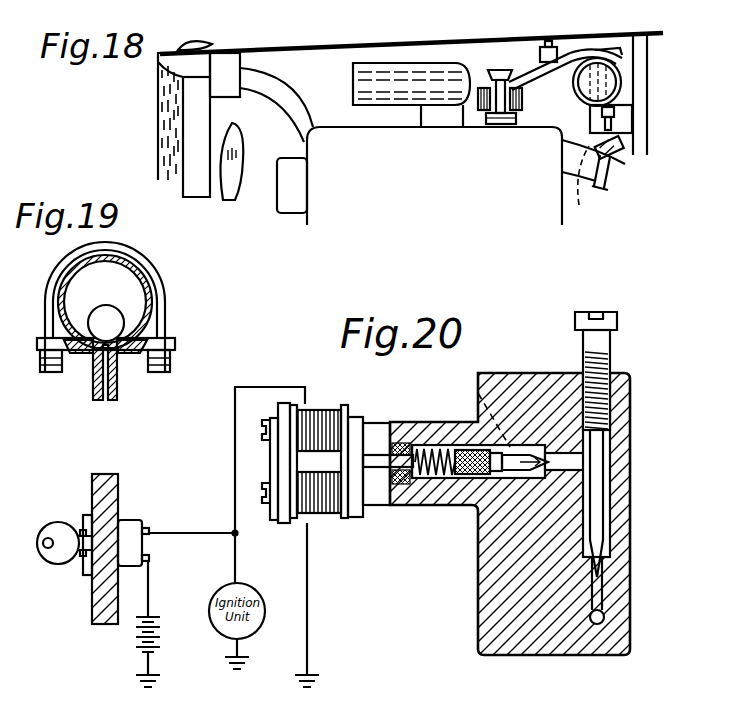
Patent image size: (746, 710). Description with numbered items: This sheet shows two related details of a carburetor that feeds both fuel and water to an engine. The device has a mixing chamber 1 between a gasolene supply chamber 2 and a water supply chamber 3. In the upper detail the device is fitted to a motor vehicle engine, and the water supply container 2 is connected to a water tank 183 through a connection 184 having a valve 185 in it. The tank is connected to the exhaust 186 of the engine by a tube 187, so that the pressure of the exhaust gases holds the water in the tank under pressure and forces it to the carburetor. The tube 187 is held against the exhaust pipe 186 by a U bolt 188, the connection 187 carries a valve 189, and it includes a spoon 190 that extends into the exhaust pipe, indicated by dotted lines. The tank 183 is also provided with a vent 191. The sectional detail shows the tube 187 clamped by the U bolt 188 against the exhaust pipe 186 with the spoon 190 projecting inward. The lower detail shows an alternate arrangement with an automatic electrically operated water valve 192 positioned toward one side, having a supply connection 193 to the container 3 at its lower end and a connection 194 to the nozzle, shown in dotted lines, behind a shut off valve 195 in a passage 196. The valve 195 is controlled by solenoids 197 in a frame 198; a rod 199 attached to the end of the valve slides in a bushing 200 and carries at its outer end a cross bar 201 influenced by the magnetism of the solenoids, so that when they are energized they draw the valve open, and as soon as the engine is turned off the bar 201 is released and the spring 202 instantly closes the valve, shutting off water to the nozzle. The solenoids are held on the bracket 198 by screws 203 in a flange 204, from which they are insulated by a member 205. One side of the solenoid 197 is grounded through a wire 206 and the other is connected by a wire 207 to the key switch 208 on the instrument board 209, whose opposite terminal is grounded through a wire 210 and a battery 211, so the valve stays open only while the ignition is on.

In FIG. 18, the mixing chamber 1 is at (502, 112).
In FIG. 18, the gasolene supply chamber 2 is at (524, 96).
In FIG. 18, the water supply chamber 3 is at (487, 100).
In FIG. 18, the water tank 183 is at (620, 84).
In FIG. 18, the connection 184 is at (525, 72).
In FIG. 18, the valve 185 is at (546, 45).
In FIG. 18, the exhaust pipe 186 is at (613, 173).
In FIG. 19, the exhaust pipe 186 is at (152, 293).
In FIG. 18, the tube 187 is at (612, 96).
In FIG. 19, the tube 187 is at (118, 390).
In FIG. 18, the U bolt 188 is at (598, 190).
In FIG. 19, the U bolt 188 is at (150, 266).
In FIG. 18, the valve 189 is at (614, 118).
In FIG. 18, the spoon 190 is at (598, 189).
In FIG. 19, the spoon 190 is at (120, 321).
In FIG. 18, the vent 191 is at (562, 72).
In FIG. 20, the water valve 192 is at (602, 476).
In FIG. 20, the supply connection 193 is at (605, 612).
In FIG. 20, the connection to the nozzle 194 is at (480, 395).
In FIG. 20, the shut off valve 195 is at (512, 474).
In FIG. 20, the passage 196 is at (596, 485).
In FIG. 20, the solenoids 197 is at (316, 410).
In FIG. 20, the frame 198 is at (376, 426).
In FIG. 20, the rod 199 is at (382, 468).
In FIG. 20, the bushing 200 is at (422, 478).
In FIG. 20, the cross bar 201 is at (358, 500).
In FIG. 20, the spring 202 is at (462, 476).
In FIG. 20, the screws 203 is at (268, 437).
In FIG. 20, the flange 204 is at (276, 452).
In FIG. 20, the insulating member 205 is at (286, 466).
In FIG. 20, the ground wire 206 is at (307, 613).
In FIG. 20, the wire 207 is at (305, 387).
In FIG. 20, the key switch 208 is at (135, 522).
In FIG. 20, the instrument board 209 is at (92, 489).
In FIG. 20, the wire 210 is at (150, 590).
In FIG. 20, the battery 211 is at (160, 640).